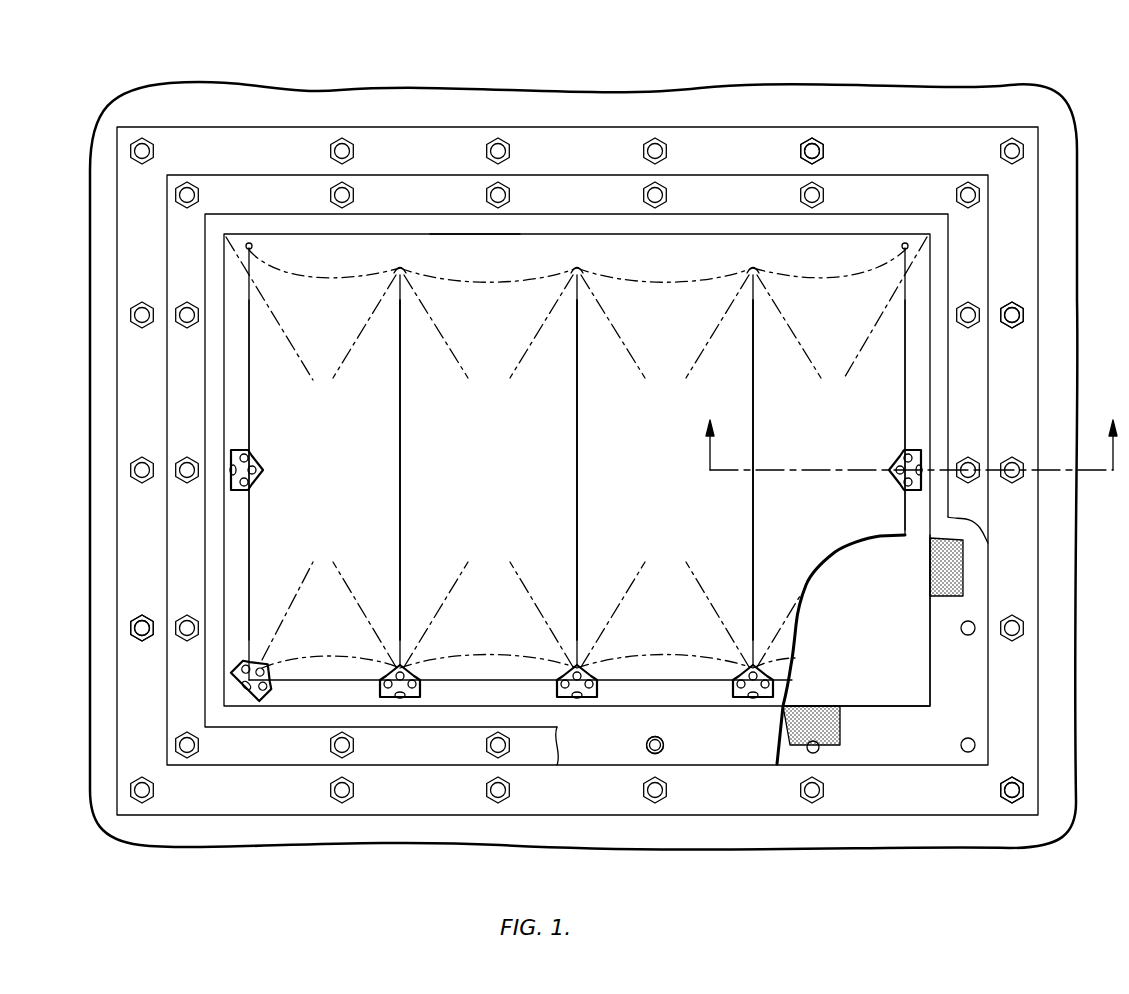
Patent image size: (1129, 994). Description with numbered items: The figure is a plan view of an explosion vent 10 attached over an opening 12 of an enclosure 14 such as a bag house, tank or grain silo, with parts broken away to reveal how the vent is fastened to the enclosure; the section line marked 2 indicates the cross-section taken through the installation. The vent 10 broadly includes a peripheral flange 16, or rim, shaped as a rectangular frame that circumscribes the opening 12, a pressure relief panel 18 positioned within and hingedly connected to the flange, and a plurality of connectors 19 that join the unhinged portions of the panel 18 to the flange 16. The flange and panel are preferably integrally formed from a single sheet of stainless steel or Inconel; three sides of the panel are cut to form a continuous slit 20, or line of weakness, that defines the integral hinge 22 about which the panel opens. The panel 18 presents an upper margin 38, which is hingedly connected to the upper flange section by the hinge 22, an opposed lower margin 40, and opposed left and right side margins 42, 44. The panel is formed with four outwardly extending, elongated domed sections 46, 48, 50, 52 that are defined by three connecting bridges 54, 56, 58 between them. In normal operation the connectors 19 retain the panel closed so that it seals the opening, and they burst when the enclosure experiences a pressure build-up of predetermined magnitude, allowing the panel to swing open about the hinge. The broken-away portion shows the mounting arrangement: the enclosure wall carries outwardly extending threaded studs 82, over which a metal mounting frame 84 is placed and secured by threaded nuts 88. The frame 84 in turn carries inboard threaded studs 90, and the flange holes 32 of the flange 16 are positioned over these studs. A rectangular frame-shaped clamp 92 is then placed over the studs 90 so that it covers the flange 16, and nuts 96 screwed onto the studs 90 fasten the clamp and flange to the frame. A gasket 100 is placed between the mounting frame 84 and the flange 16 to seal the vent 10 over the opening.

The explosion vent 10 is at (768, 785).
The opening 12 is at (853, 649).
The enclosure 14 is at (1056, 612).
The peripheral flange 16 is at (975, 533).
The pressure relief panel 18 is at (690, 260).
The connectors 19 is at (268, 452).
The slit 20 is at (250, 358).
The hinge 22 is at (545, 247).
The flange holes 32 is at (645, 750).
The upper margin 38 is at (470, 245).
The lower margin 40 is at (492, 668).
The left side margin 42 is at (258, 535).
The right side margin 44 is at (893, 518).
The domed section 46 is at (324, 470).
The domed section 48 is at (488, 470).
The domed section 50 is at (665, 470).
The domed section 52 is at (829, 470).
The connecting bridge 54 is at (400, 447).
The connecting bridge 56 is at (577, 455).
The connecting bridge 58 is at (753, 578).
The threaded studs 82 is at (349, 150).
The mounting frame 84 is at (1018, 692).
The threaded nuts 88 is at (826, 153).
The mounting frame studs 90 is at (337, 193).
The clamp 92 is at (975, 386).
The nuts 96 is at (356, 195).
The gasket 100 is at (950, 570).
The section line 2- 2 is at (913, 430).